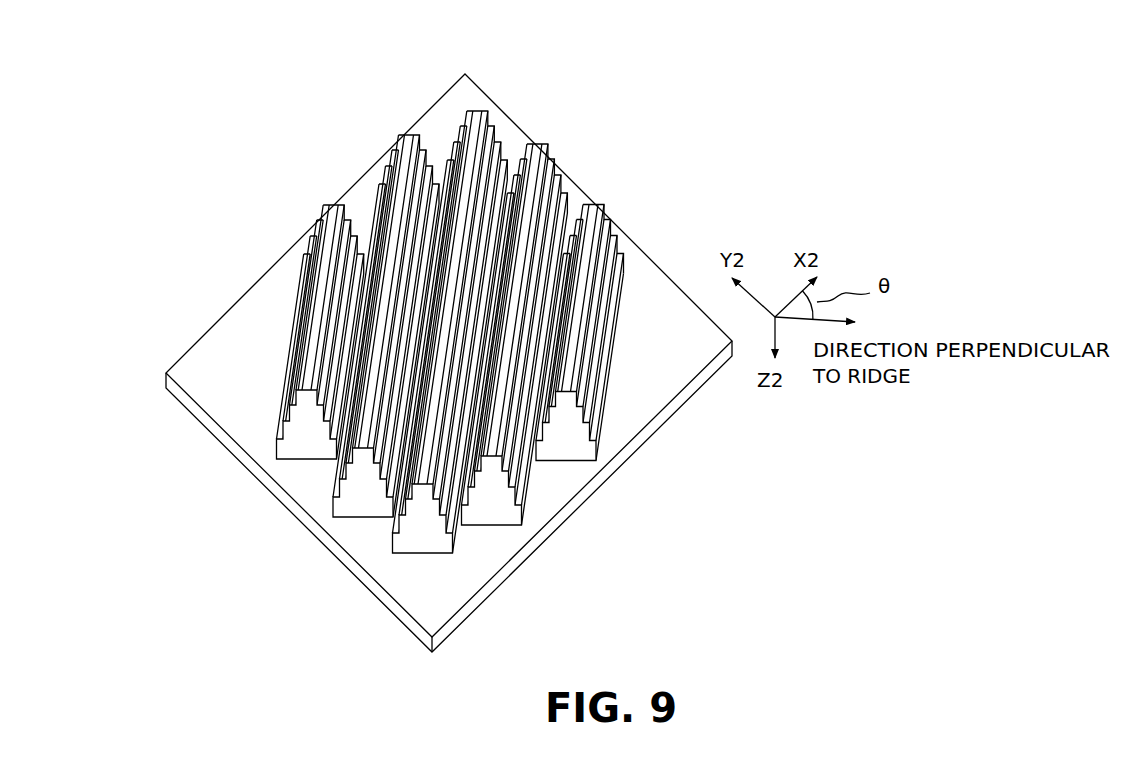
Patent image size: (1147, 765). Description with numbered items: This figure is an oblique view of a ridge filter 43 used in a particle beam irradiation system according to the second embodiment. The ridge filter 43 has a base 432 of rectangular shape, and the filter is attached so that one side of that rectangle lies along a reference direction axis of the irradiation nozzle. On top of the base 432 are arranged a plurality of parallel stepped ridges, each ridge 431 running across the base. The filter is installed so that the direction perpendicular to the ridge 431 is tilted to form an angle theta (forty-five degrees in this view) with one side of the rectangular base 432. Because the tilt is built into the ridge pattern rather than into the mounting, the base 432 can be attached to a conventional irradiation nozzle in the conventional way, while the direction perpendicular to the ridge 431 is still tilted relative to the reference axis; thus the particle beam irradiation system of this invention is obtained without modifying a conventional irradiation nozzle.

The ridge filter 43 is at (264, 123).
The ridge 431 is at (475, 122).
The base 432 is at (647, 273).